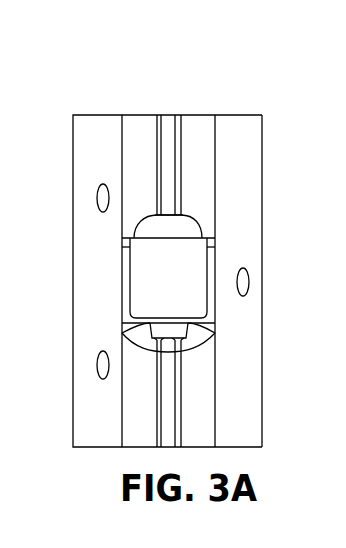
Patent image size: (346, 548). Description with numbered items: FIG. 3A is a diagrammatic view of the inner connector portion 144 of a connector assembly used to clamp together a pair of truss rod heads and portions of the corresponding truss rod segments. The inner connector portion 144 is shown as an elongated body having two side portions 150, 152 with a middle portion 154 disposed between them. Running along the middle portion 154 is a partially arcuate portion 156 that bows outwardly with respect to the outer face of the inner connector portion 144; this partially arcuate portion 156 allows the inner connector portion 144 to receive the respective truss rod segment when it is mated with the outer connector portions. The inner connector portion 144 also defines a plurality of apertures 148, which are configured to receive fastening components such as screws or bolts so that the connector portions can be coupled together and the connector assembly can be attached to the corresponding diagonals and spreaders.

The inner connector portion 144 is at (178, 104).
The apertures 148 is at (99, 198).
The side portion 150 is at (97, 116).
The side portion 152 is at (240, 117).
The middle portion 154 is at (205, 123).
The partially arcuate portion 156 is at (156, 127).